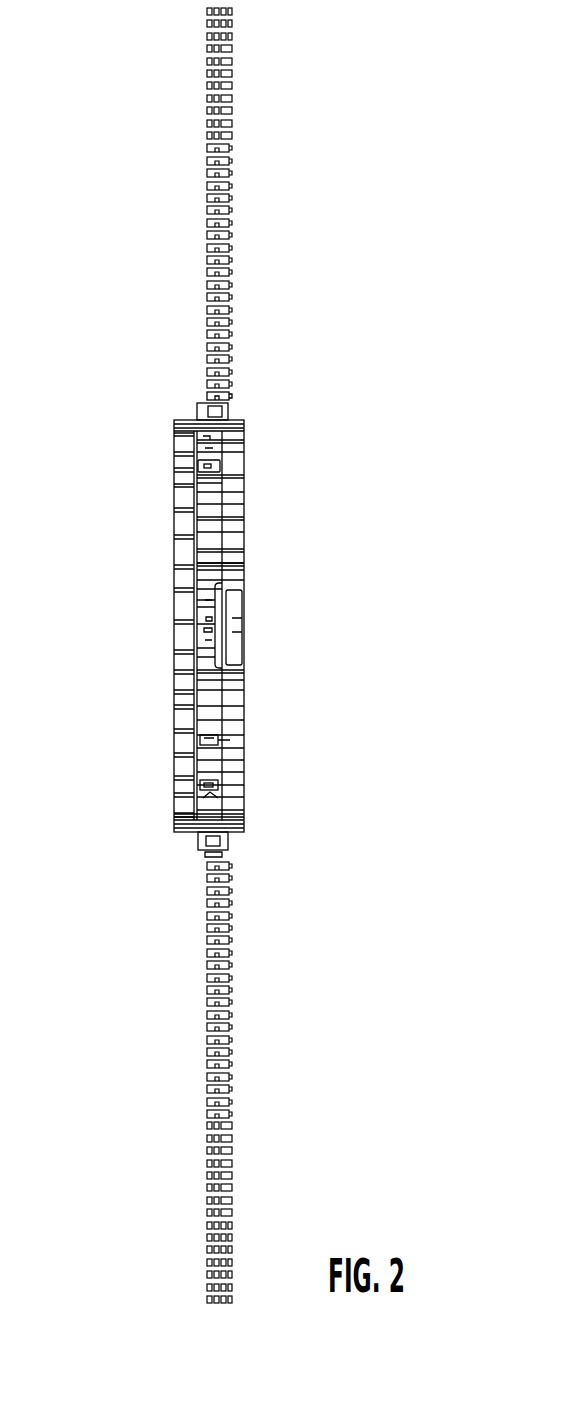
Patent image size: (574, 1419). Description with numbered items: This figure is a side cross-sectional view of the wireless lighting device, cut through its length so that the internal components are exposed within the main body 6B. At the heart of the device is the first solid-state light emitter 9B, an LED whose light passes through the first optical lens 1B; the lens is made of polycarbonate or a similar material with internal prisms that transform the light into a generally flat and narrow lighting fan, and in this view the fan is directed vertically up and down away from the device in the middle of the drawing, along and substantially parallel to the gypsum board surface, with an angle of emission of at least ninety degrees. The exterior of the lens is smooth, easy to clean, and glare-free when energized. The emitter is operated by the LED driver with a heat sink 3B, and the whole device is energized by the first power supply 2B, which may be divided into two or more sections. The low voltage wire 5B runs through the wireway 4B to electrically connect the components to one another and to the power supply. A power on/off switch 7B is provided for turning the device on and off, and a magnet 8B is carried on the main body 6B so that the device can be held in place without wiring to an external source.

The first optical lens 1B is at (228, 413).
The first power supply 2B is at (221, 580).
The LED driver with a heat sink 3B is at (258, 650).
The wireway 4B is at (208, 712).
The low voltage wire 5B is at (203, 757).
The main body 6B is at (172, 821).
The power on/off switch 7B is at (176, 632).
The magnet 8B is at (192, 574).
The first solid-state light emitter 9B is at (192, 464).